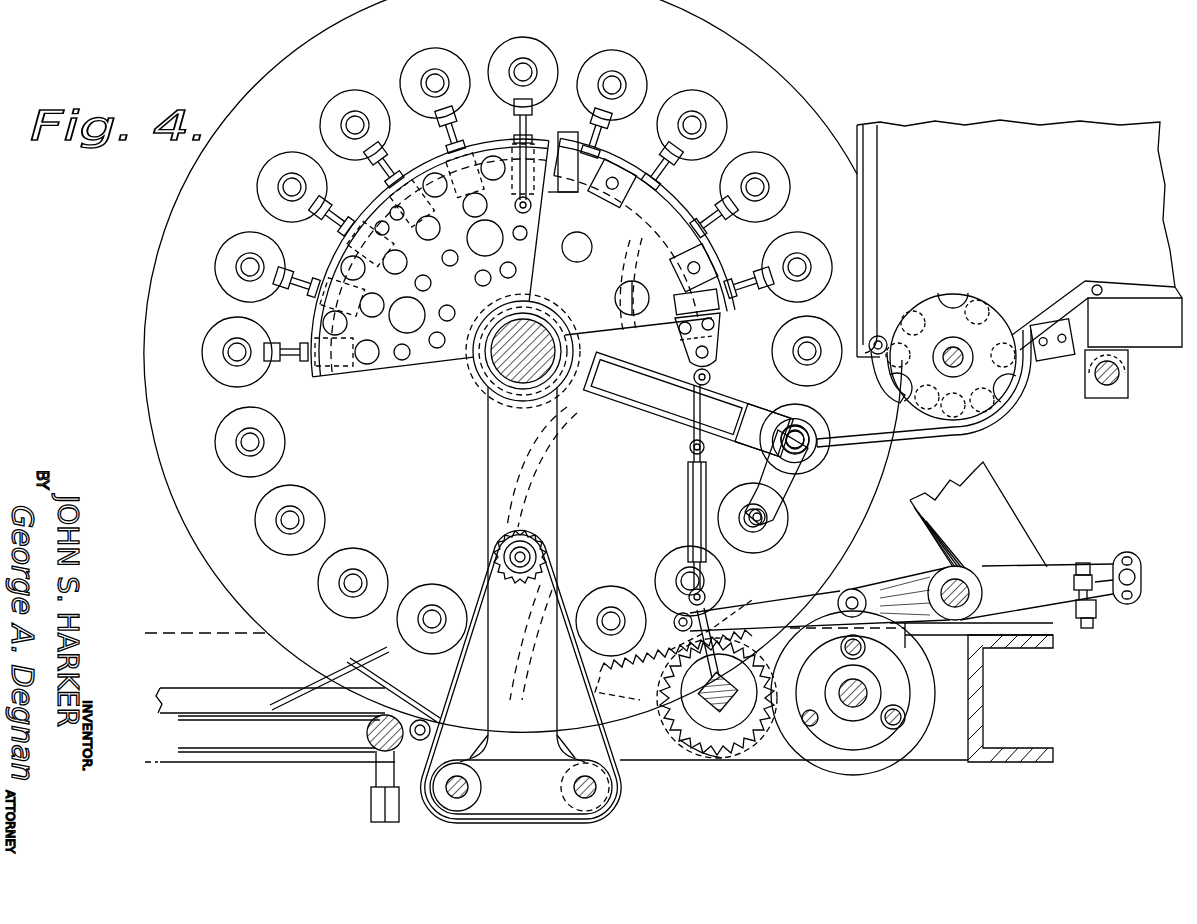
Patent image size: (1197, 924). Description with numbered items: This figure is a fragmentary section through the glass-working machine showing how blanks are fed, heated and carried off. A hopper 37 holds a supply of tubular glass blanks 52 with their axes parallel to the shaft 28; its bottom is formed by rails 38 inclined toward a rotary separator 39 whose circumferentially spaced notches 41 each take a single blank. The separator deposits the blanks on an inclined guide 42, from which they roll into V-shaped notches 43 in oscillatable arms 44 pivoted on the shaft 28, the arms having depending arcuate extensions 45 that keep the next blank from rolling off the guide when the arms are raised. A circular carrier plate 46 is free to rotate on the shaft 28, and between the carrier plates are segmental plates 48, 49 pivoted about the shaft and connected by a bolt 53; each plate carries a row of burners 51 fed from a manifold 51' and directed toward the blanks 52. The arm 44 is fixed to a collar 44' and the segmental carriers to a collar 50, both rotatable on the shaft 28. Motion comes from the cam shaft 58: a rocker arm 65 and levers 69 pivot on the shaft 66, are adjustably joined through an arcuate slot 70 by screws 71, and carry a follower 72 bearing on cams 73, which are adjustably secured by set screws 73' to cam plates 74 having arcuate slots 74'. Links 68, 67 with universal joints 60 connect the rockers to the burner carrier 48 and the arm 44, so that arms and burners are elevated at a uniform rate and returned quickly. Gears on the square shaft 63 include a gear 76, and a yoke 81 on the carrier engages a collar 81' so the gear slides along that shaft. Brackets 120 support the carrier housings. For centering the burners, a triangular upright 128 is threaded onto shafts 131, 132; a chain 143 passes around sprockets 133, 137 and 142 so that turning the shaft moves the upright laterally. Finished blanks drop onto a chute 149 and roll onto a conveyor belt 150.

The shaft 28 is at (487, 374).
The hopper 37 is at (1016, 122).
The rails 38 is at (1150, 298).
The rotary separator 39 is at (1015, 318).
The notches 41 is at (962, 300).
The inclined guide 42 is at (862, 444).
The notches 43 is at (806, 452).
The oscillatable arms 44 is at (702, 409).
The collar 44' is at (553, 553).
The depending arcuate extensions 45 is at (790, 495).
The circular plate 46 is at (148, 296).
The segmental plate 48 is at (650, 326).
The segmental plate 49 is at (352, 362).
The collar 50 is at (558, 322).
The burners 51 is at (678, 211).
The manifold 51' is at (570, 155).
The blanks 52 is at (798, 262).
The bolt 53 is at (523, 198).
The cam shaft 58 is at (868, 700).
The universal joints 60 is at (708, 372).
The shaft 63 is at (710, 678).
The rocker arm 65 is at (838, 594).
The shaft 66 is at (958, 582).
The link 67 is at (706, 386).
The link 68 is at (688, 480).
The levers 69 is at (900, 592).
The arcuate slot 70 is at (1132, 555).
The screws 71 is at (1095, 620).
The follower 72 is at (860, 592).
The cams 73 is at (836, 712).
The set screws 73' is at (835, 657).
The cam plates 74 is at (829, 763).
The arcuate slots 74' is at (871, 721).
The gear 76 is at (735, 757).
The yoke 81 is at (673, 663).
The collar 81' is at (679, 745).
The brackets 120 is at (1005, 498).
The triangular upright 128 is at (488, 496).
The shaft 131 is at (598, 790).
The shaft 132 is at (470, 787).
The sprocket 133 is at (572, 760).
The sprocket 137 is at (493, 565).
The sprocket 142 is at (478, 755).
The chain 143 is at (560, 570).
The chute 149 is at (333, 665).
The conveyor belt 150 is at (290, 763).